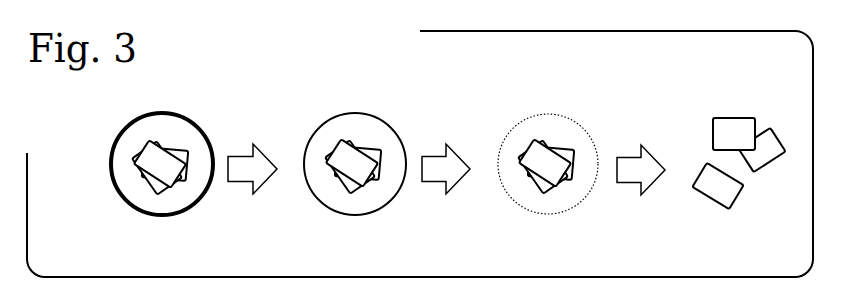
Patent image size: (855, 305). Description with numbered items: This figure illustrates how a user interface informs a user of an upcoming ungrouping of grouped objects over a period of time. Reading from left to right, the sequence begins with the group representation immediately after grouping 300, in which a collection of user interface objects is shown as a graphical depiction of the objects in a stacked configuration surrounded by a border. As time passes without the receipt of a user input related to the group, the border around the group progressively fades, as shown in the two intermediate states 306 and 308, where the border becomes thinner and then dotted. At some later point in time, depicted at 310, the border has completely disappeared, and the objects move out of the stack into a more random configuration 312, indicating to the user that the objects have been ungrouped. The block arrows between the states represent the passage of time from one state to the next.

The group representation immediately after grouping 300 is at (131, 104).
The group representation at a later time 306 is at (341, 104).
The group representation at a still later time 308 is at (520, 105).
The ungrouped state 310 is at (708, 105).
The random configuration 312 is at (733, 165).